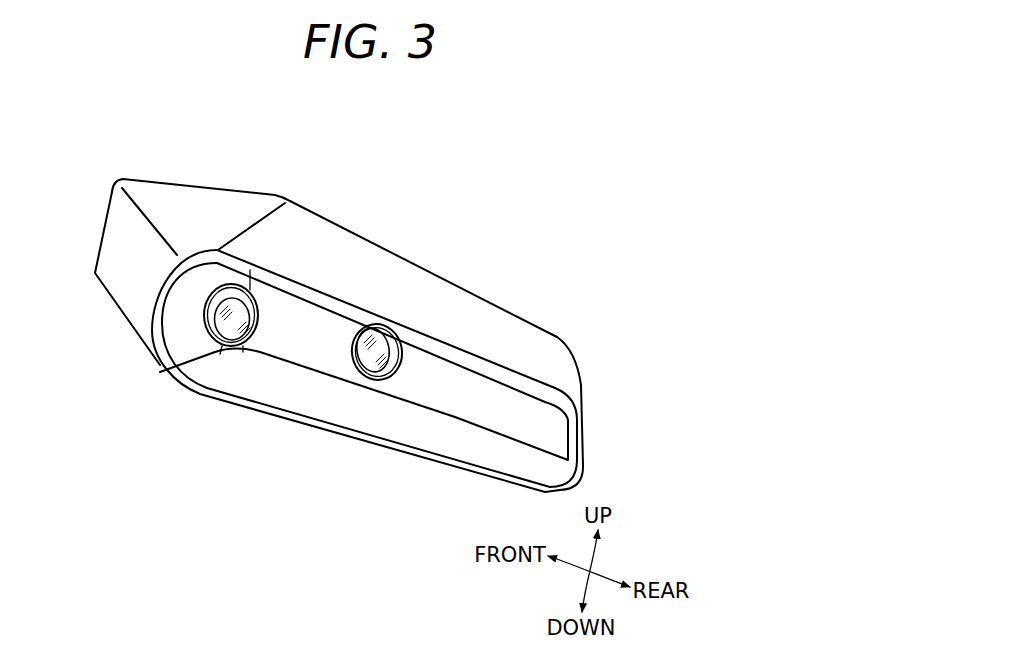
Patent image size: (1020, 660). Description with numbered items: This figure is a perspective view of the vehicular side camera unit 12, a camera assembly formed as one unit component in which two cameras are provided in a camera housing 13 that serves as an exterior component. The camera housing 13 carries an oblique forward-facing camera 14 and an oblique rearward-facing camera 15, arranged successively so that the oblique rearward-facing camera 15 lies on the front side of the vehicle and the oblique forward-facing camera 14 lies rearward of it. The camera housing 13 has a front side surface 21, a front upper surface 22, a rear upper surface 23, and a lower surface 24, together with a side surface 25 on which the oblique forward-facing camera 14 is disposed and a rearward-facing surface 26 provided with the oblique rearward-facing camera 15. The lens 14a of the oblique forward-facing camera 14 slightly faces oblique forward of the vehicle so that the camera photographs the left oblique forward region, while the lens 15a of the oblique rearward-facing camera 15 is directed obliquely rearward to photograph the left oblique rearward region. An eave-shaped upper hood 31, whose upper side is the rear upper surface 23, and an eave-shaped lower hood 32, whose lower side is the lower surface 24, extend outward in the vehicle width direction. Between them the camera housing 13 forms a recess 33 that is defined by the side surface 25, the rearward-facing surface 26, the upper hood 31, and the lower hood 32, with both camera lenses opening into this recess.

The side camera unit 12 is at (306, 165).
The camera housing 13 is at (392, 252).
The oblique forward-facing camera 14 is at (383, 382).
The lens 14a is at (360, 370).
The oblique rearward-facing camera 15 is at (218, 332).
The lens 15a is at (230, 333).
The front side surface 21 is at (108, 242).
The front upper surface 22 is at (193, 200).
The rear upper surface 23 is at (447, 302).
The lower surface 24 is at (302, 420).
The side surface 25 is at (468, 402).
The rearward-facing surface 26 is at (178, 323).
The upper hood 31 is at (334, 260).
The lower hood 32 is at (270, 412).
The recess 33 is at (284, 312).